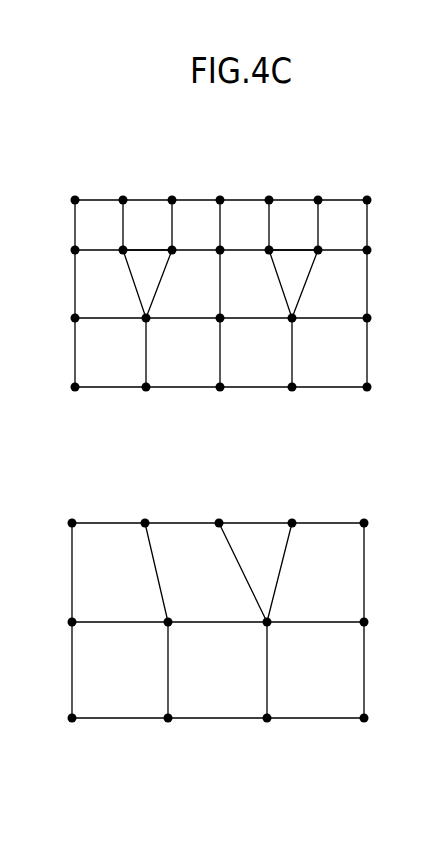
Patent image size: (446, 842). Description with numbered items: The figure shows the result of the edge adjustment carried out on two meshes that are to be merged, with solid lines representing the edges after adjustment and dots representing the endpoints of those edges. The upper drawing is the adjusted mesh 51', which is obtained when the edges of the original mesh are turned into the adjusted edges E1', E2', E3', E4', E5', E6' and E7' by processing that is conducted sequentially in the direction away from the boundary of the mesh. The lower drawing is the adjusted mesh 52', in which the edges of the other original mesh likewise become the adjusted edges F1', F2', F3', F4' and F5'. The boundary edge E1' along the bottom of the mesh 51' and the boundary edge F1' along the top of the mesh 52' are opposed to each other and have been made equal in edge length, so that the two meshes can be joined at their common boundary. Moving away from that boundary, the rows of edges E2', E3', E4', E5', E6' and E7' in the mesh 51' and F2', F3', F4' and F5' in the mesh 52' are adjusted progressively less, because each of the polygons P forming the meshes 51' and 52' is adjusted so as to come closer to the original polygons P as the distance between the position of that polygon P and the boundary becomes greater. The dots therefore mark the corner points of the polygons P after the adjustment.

The mesh 51' is at (224, 281).
The mesh 52' is at (221, 631).
The polygon P is at (74, 211).
The boundary edge E1' is at (221, 420).
The edge E2' is at (252, 353).
The edge E3' is at (221, 341).
The edge E4' is at (221, 246).
The edge E5' is at (221, 269).
The edge E6' is at (219, 239).
The edge E7' is at (235, 165).
The boundary edge F1' is at (218, 491).
The edge F2' is at (221, 572).
The edge F3' is at (218, 644).
The edge F4' is at (192, 670).
The edge F5' is at (218, 743).